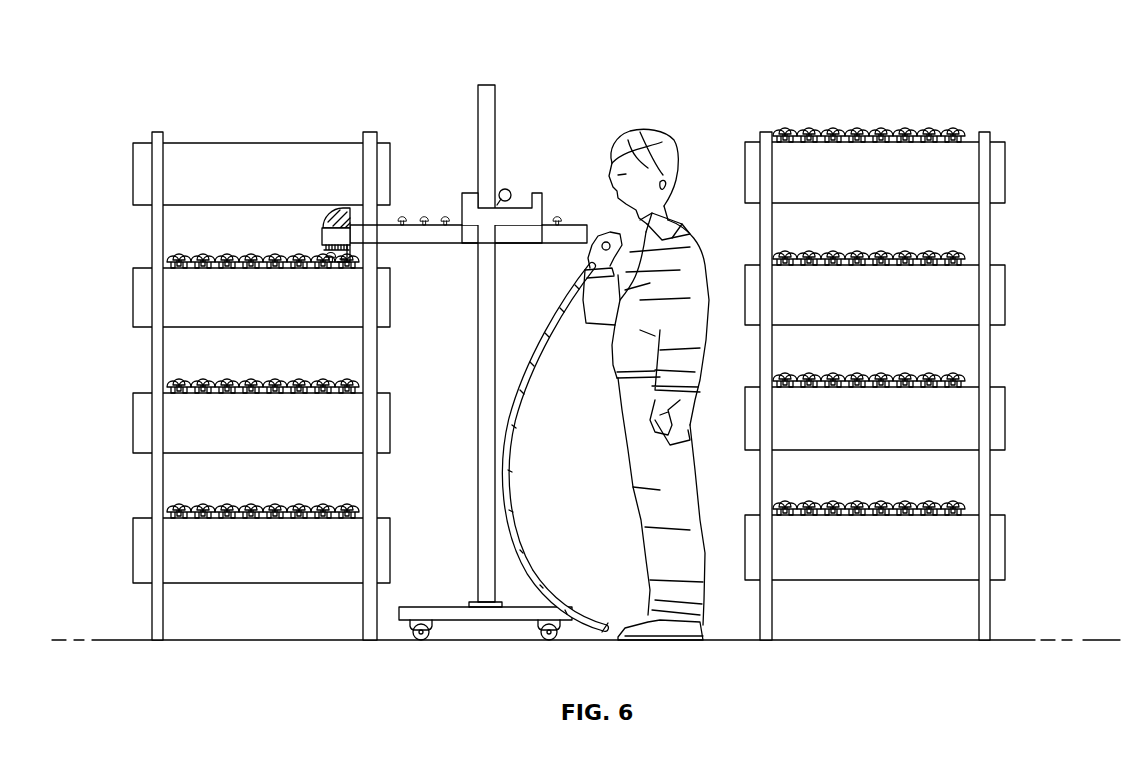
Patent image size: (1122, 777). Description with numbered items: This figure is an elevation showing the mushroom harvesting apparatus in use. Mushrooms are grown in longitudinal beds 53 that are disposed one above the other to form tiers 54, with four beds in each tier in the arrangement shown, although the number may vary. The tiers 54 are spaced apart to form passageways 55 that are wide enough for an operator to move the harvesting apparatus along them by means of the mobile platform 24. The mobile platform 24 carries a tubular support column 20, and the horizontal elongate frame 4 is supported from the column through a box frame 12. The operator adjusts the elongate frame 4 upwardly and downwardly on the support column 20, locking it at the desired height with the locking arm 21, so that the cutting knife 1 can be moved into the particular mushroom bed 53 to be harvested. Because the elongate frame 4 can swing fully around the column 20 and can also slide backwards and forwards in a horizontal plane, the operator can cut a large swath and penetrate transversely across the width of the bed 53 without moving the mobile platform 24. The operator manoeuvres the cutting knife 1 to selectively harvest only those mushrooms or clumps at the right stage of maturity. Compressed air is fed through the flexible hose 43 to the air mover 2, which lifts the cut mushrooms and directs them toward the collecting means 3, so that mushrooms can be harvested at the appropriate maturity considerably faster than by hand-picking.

The cutting means 1 is at (330, 263).
The lifting means 2 is at (320, 224).
The collecting means 3 is at (419, 212).
The horizontal elongate frame 4 is at (417, 237).
The box frame 12 is at (518, 237).
The tubular support column 20 is at (485, 342).
The locking arm 21 is at (507, 189).
The mobile platform 24 is at (468, 613).
The flexible hose 43 is at (510, 444).
The longitudinal beds 53 is at (205, 157).
The tiers 54 is at (573, 367).
The passageways 55 is at (465, 353).